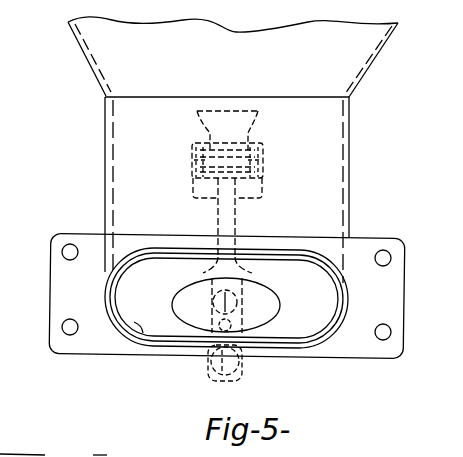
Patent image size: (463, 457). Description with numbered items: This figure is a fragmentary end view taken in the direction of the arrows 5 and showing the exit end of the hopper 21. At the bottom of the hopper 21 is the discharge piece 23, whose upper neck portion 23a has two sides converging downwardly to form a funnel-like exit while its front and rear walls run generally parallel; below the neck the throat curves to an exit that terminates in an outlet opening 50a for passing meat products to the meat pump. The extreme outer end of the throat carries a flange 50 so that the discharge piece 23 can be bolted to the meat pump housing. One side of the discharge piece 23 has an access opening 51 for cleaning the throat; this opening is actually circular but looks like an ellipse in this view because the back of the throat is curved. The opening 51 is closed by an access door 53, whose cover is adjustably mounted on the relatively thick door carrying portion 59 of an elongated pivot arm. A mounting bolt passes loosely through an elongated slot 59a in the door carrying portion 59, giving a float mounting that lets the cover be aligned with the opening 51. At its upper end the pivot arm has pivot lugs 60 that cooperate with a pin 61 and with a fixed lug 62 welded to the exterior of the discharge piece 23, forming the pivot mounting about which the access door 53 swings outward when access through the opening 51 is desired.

The arrows 5— 5 is at (14, 77).
The hopper 21 is at (374, 75).
The discharge piece 23 is at (98, 152).
The upper neck portion 23a is at (335, 160).
The flange 50 is at (58, 290).
The outlet opening 50a is at (143, 328).
The access opening 51 is at (271, 298).
The access door 53 is at (209, 219).
The door carrying portion 59 is at (199, 345).
The elongated slot 59a is at (213, 302).
The pivot lugs 60 is at (259, 145).
The pin 61 is at (265, 165).
The fixed lug 62 is at (247, 109).